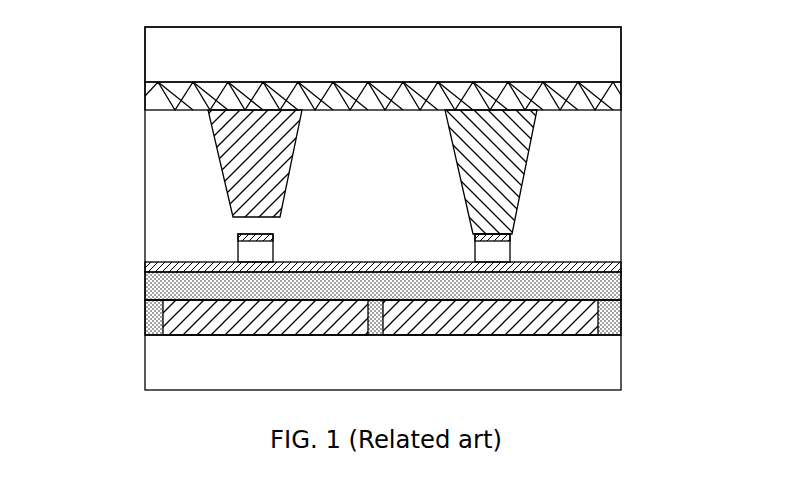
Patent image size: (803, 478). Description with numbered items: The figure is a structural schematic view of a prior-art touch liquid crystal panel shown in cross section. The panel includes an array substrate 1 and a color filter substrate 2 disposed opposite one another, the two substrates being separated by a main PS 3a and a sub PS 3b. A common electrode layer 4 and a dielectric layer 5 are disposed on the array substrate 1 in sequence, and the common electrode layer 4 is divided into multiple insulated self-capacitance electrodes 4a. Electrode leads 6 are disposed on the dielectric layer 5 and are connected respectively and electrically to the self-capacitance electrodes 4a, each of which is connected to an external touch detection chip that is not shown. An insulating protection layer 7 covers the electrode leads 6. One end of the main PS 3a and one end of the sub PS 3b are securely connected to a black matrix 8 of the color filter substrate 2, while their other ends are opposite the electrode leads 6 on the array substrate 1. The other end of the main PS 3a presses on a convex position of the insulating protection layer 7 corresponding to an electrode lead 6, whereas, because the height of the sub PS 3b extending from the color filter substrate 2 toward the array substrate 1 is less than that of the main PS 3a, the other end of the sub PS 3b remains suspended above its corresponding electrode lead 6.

The array substrate 1 is at (610, 365).
The color filter substrate 2 is at (610, 52).
The main PS 3a is at (513, 178).
The sub PS 3b is at (240, 180).
The common electrode layer 4 is at (150, 320).
The self-capacitance electrodes 4a is at (145, 296).
The dielectric layer 5 is at (621, 315).
The electrode leads 6 is at (488, 258).
The insulating protection layer 7 is at (621, 263).
The black matrix 8 is at (147, 100).